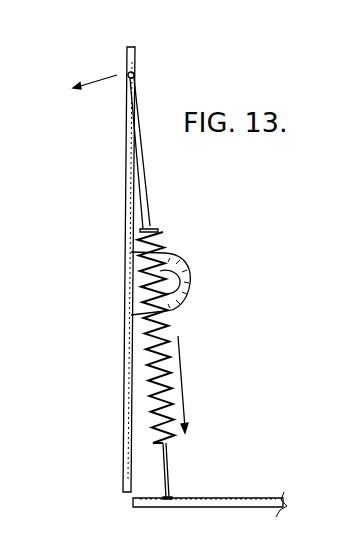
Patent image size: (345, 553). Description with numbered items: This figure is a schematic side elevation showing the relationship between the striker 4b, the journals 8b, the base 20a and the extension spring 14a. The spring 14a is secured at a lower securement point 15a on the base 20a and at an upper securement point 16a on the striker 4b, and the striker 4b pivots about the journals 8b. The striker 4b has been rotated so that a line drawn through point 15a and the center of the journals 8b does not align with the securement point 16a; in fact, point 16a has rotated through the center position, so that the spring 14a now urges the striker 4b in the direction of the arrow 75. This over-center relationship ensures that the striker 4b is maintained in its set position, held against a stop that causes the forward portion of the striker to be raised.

The striker 4b is at (125, 163).
The securement point 16a is at (135, 75).
The arrow 75 is at (101, 75).
The journals 8b is at (185, 266).
The extension spring 14a is at (170, 320).
The securement point 15a is at (172, 499).
The base plate 20a is at (268, 498).